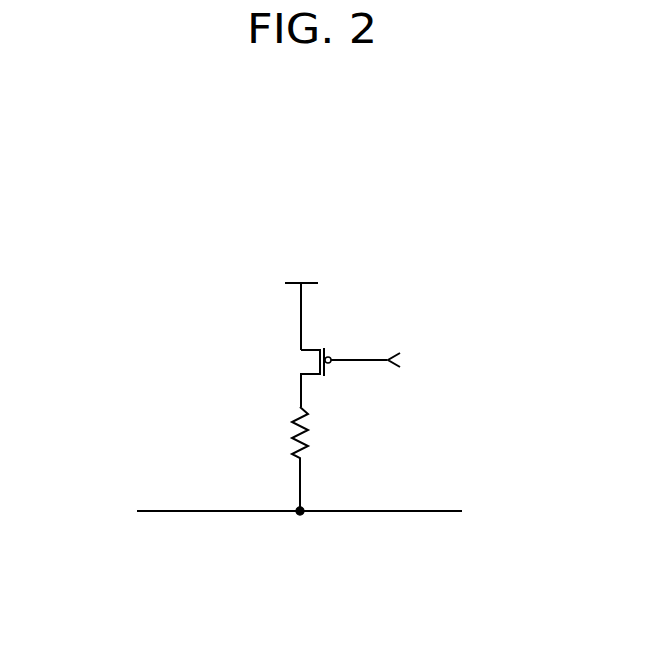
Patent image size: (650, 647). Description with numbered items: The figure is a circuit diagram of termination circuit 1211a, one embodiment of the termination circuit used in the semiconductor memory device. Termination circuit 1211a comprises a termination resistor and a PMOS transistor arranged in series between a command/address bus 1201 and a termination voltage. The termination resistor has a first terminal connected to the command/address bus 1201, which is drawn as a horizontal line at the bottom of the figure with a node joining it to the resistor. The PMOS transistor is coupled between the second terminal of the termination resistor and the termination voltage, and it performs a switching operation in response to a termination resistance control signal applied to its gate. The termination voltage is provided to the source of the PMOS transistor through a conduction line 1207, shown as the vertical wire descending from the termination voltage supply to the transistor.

The termination circuit 1211a is at (336, 191).
The conduction line 1207 is at (301, 320).
The command/address bus 1201 is at (215, 511).